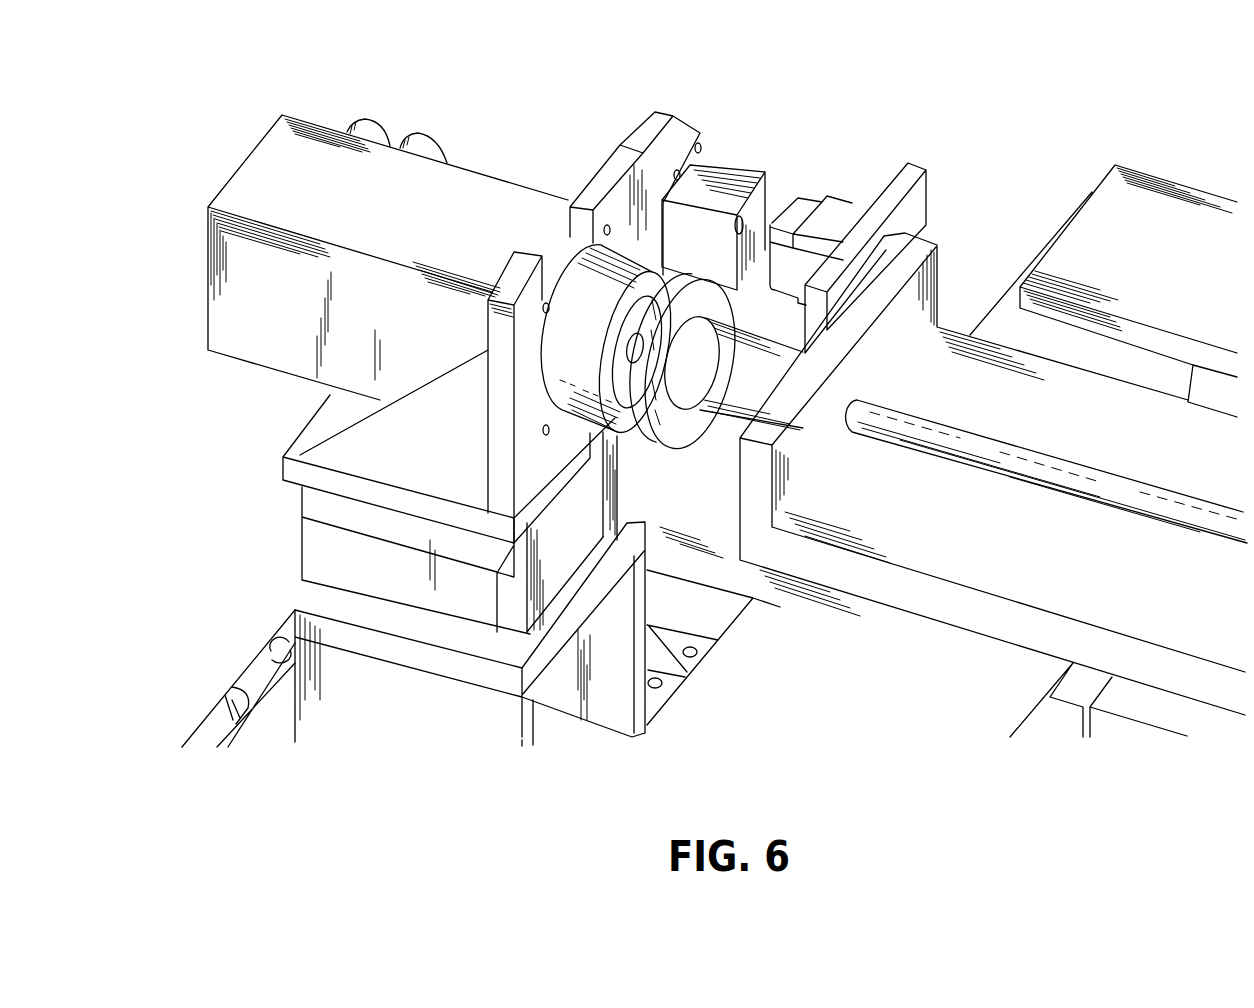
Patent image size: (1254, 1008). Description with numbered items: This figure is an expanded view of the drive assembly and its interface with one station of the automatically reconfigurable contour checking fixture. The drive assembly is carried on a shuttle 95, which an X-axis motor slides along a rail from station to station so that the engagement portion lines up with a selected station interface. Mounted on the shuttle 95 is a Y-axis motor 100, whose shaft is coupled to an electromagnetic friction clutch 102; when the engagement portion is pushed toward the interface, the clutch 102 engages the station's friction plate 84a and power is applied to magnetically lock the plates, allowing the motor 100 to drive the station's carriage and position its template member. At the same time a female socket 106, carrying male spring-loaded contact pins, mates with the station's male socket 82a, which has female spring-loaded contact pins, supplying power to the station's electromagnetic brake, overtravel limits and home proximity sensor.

The Y-axis motor 100 is at (297, 117).
The electromagnetic friction clutch 102 is at (588, 283).
The female socket 106 is at (740, 155).
The male electrical socket 82a is at (845, 197).
The friction plate 84a is at (676, 449).
The shuttle 95 is at (267, 650).